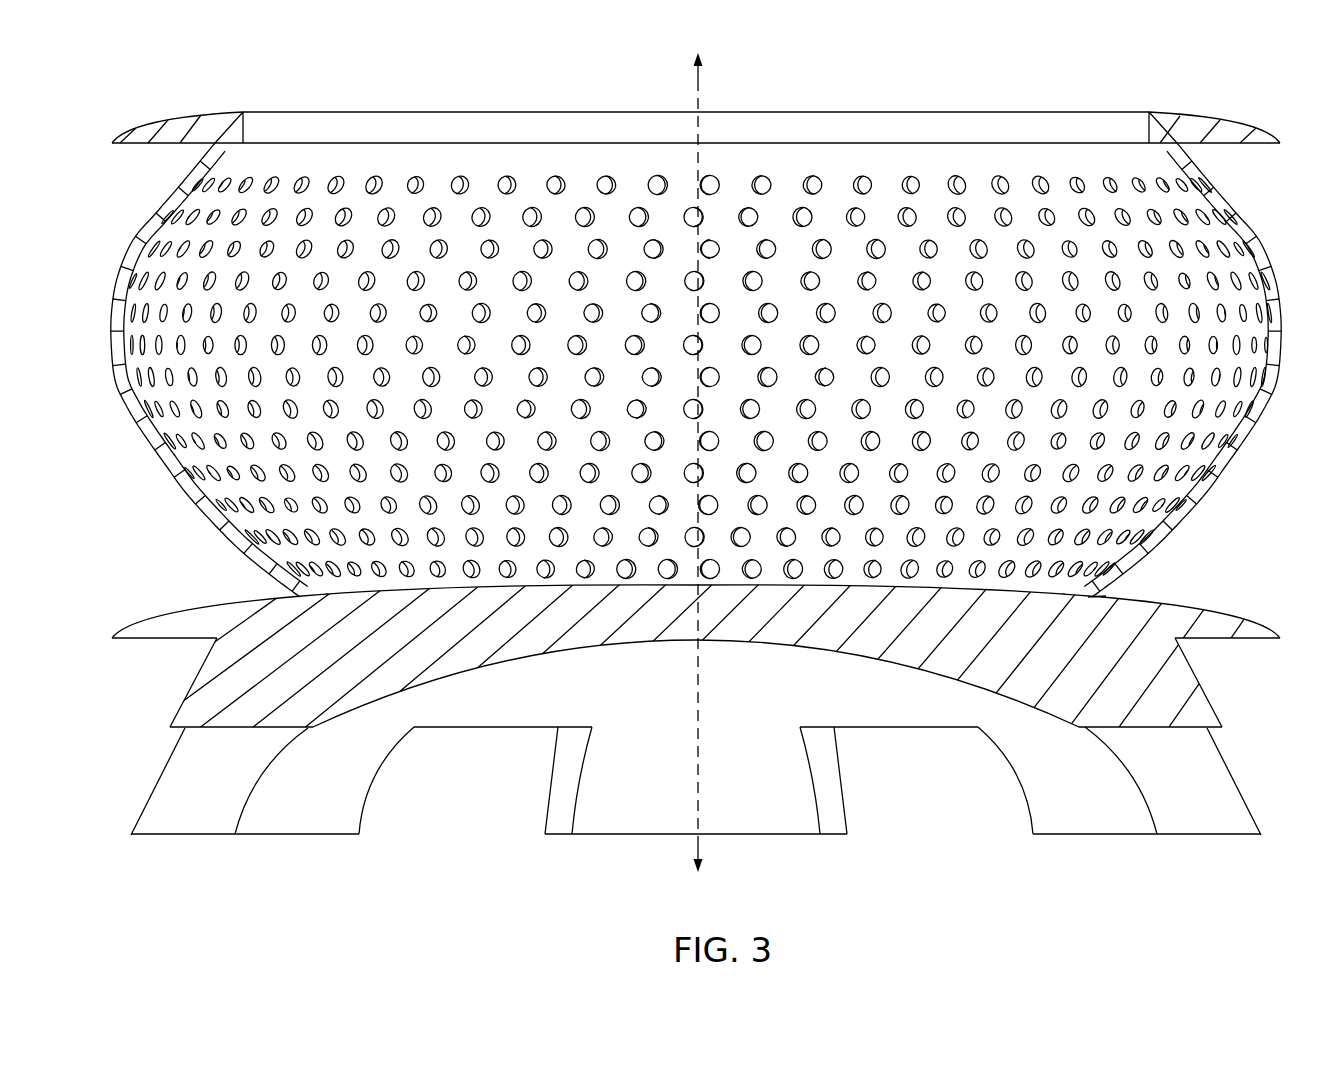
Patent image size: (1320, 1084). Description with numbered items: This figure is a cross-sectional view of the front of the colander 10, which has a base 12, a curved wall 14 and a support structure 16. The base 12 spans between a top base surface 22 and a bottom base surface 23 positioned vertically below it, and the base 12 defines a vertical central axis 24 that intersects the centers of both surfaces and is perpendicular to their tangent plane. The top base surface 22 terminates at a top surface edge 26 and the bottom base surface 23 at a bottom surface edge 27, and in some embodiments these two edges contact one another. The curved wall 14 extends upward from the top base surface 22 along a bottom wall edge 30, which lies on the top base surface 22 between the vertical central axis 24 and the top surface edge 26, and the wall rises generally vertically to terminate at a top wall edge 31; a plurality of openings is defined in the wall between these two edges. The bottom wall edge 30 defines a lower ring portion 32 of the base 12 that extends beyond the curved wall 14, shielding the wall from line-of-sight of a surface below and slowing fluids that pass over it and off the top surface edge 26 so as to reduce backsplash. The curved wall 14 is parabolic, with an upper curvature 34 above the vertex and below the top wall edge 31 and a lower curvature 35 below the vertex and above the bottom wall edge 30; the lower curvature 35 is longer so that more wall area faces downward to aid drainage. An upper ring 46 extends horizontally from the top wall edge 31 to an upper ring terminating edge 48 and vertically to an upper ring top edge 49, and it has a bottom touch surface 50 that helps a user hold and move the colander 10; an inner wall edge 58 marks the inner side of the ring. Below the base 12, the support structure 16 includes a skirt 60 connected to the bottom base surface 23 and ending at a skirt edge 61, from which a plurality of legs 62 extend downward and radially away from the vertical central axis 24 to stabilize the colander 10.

The colander 10 is at (699, 463).
The base 12 is at (697, 723).
The curved wall 14 is at (691, 377).
The support structure 16 is at (361, 788).
The top base surface 22 is at (227, 605).
The bottom base surface 23 is at (165, 642).
The vertical central axis 24 is at (698, 95).
The top surface edge 26 is at (112, 640).
The bottom surface edge 27 is at (1280, 638).
The bottom wall edge 30 is at (1094, 597).
The top wall edge 31 is at (1200, 156).
The lower ring portion 32 is at (164, 599).
The upper curvature 34 is at (1267, 262).
The lower curvature 35 is at (1230, 460).
The upper ring 46 is at (184, 118).
The upper ring terminating edge 48 is at (112, 143).
The upper ring top edge 49 is at (243, 112).
The bottom touch surface 50 is at (187, 157).
The inner wall edge 58 is at (1149, 112).
The skirt 60 is at (1234, 689).
The skirt edge 61 is at (1222, 728).
The legs 62 is at (761, 806).